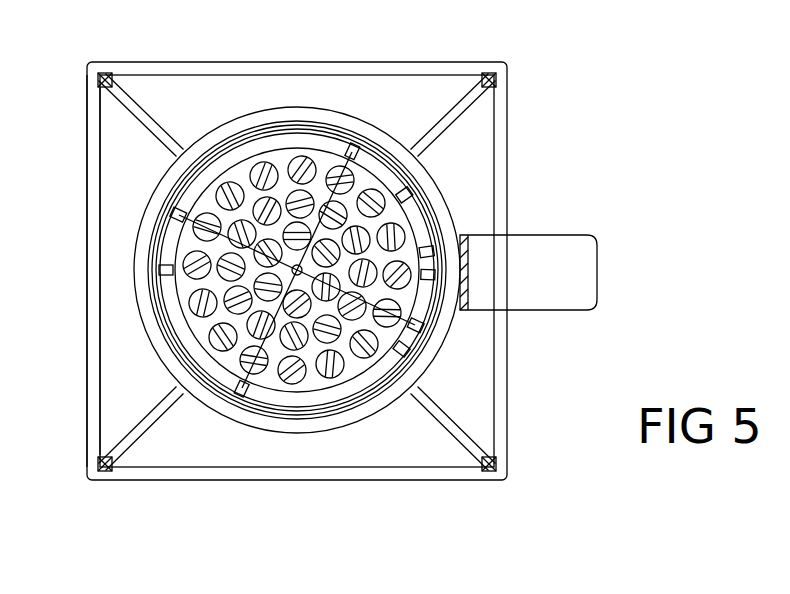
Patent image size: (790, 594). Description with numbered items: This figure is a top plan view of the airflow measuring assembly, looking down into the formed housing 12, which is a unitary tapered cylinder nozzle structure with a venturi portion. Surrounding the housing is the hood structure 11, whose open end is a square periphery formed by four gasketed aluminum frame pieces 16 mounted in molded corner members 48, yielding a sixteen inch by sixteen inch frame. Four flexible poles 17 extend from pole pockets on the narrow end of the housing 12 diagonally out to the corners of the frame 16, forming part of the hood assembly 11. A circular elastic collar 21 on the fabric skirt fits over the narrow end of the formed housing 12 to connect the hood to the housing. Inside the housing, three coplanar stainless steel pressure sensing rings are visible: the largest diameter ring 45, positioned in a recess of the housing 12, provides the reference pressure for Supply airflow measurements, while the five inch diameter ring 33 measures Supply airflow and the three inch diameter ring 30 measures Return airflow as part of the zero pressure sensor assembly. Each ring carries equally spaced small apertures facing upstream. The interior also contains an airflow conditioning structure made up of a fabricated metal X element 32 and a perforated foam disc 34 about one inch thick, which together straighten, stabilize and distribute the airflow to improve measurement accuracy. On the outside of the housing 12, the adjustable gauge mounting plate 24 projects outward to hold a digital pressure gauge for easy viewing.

The hood structure 11 is at (319, 280).
The formed housing 12 is at (440, 372).
The frame 16 is at (93, 148).
The flexible poles 17 is at (128, 447).
The elastic collar 21 is at (140, 205).
The gauge mounting plate 24 is at (604, 246).
The pressure sensing ring 30 is at (297, 310).
The X element 32 is at (333, 195).
The pressure sensing ring 33 is at (290, 337).
The perforated foam disc 34 is at (200, 323).
The pressure sensing ring 45 is at (433, 220).
The molded corner members 48 is at (110, 72).